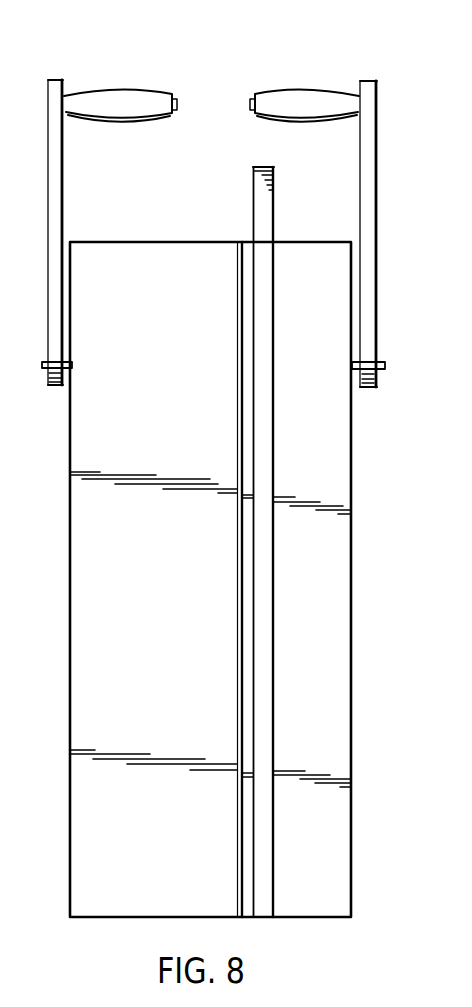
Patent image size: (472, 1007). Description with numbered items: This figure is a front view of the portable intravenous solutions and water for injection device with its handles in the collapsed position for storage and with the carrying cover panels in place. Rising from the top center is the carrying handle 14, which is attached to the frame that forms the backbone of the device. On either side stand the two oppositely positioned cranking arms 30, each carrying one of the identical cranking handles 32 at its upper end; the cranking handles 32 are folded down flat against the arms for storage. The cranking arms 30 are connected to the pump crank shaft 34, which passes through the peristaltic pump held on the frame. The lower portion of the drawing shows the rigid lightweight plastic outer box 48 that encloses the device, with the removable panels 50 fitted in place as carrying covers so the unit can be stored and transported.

The carrying handle 14 is at (263, 215).
The cranking arms 30 is at (50, 216).
The cranking handles 32 is at (127, 99).
The pump crank shaft 34 is at (44, 364).
The outer box 48 is at (322, 578).
The removable side and top panels 50 is at (112, 570).